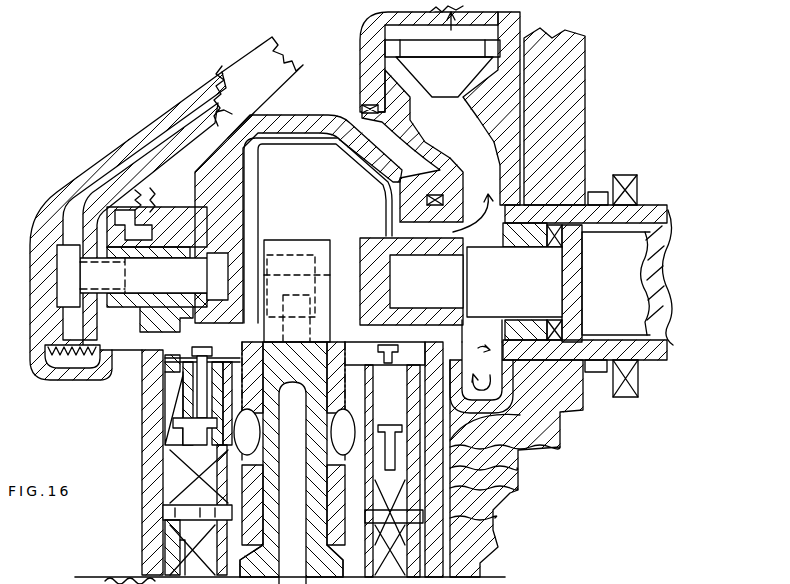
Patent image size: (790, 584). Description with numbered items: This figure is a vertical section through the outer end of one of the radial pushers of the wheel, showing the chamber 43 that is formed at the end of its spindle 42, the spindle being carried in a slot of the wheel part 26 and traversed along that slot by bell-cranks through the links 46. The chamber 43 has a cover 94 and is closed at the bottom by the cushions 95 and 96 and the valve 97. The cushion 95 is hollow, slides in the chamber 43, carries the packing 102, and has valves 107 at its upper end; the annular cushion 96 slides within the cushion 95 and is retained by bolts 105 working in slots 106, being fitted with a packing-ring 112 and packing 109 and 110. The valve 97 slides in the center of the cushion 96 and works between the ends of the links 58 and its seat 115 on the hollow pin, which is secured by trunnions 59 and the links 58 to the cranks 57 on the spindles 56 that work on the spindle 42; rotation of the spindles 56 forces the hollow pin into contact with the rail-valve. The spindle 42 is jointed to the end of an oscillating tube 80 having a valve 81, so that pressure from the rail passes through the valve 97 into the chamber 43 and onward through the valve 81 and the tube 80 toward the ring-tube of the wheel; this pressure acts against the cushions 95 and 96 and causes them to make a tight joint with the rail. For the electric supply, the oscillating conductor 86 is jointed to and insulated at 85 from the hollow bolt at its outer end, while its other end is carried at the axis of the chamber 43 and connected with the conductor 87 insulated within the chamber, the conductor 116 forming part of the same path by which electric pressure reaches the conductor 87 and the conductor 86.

The wheel part 26 is at (569, 116).
The spindle 42 is at (647, 202).
The chamber 43 is at (146, 482).
The link 46 is at (636, 378).
The spindle 56 is at (570, 277).
The crank 57 is at (382, 240).
The link 58 is at (248, 343).
The trunnion 59 is at (294, 432).
The oscillating tube 80 is at (360, 34).
The valve 81 is at (442, 54).
The insulation 85 is at (128, 226).
The oscillating conductor 86 is at (166, 203).
The conductor 87 is at (298, 233).
The cover 94 is at (308, 121).
The cushion 95 is at (163, 428).
The annular cushion 96 is at (166, 560).
The valve 97 is at (263, 504).
The packing 102 is at (165, 393).
The bolt 105 is at (169, 512).
The slot 106 is at (165, 530).
The valve 107 is at (199, 453).
The packing 109 is at (508, 490).
The packing 110 is at (518, 472).
The packing-ring 112 is at (525, 450).
The seat 115 is at (259, 530).
The conductor 116 is at (297, 291).